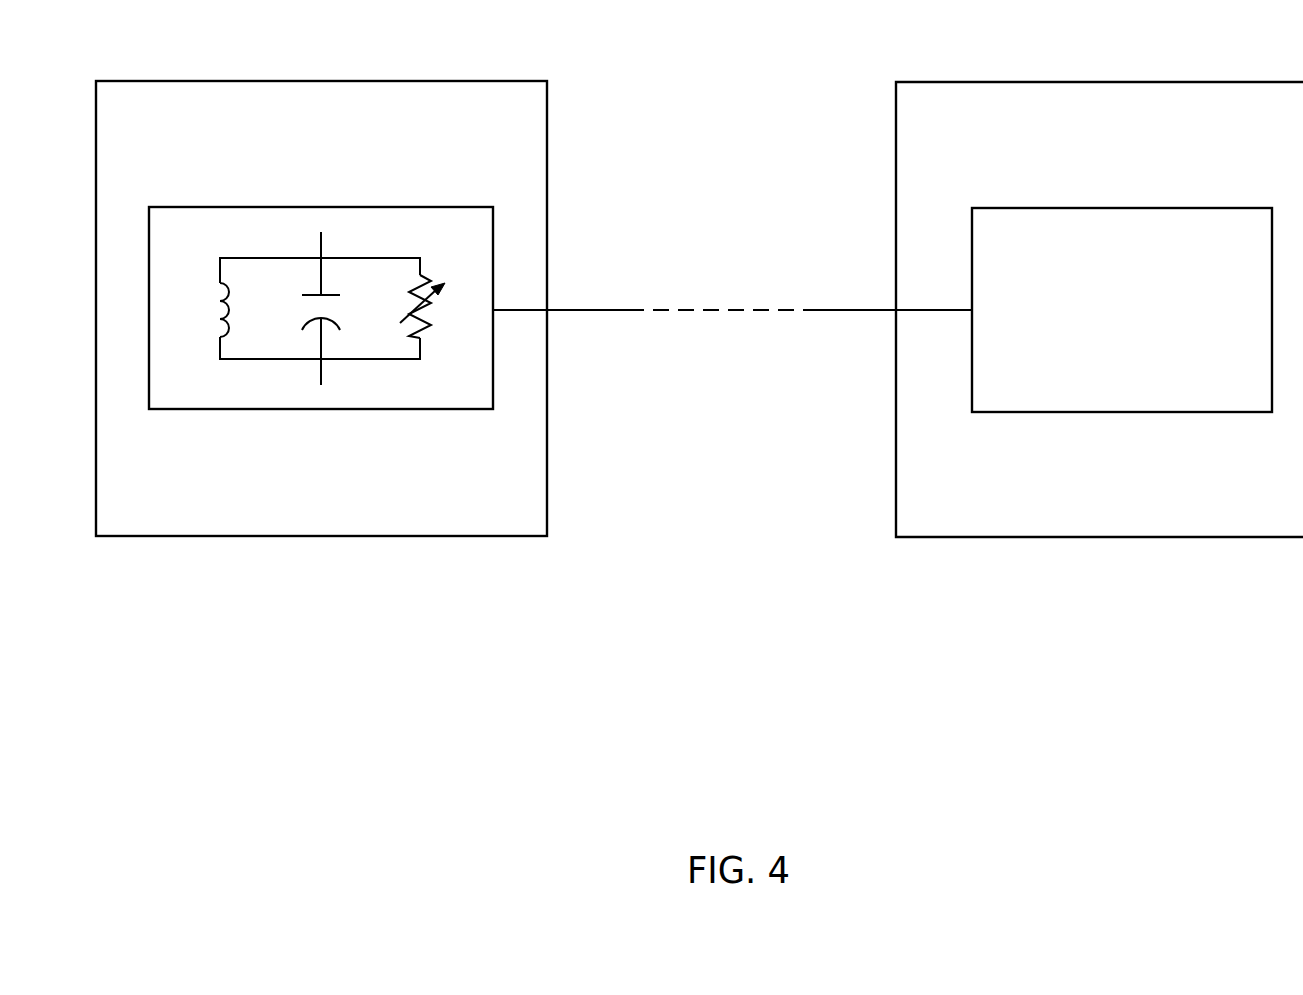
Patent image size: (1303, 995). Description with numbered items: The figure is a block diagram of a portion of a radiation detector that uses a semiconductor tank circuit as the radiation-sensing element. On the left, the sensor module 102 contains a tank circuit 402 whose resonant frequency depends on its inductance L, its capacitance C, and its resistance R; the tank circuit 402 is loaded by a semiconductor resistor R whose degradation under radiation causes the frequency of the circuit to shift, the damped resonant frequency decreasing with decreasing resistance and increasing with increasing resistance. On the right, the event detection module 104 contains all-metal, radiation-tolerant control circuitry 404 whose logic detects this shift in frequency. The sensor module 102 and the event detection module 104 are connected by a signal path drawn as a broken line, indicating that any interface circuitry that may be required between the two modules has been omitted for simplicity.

The sensor module 102 is at (505, 81).
The tank circuit 402 is at (432, 207).
The event detection module 104 is at (922, 82).
The control circuitry 404 is at (1010, 208).